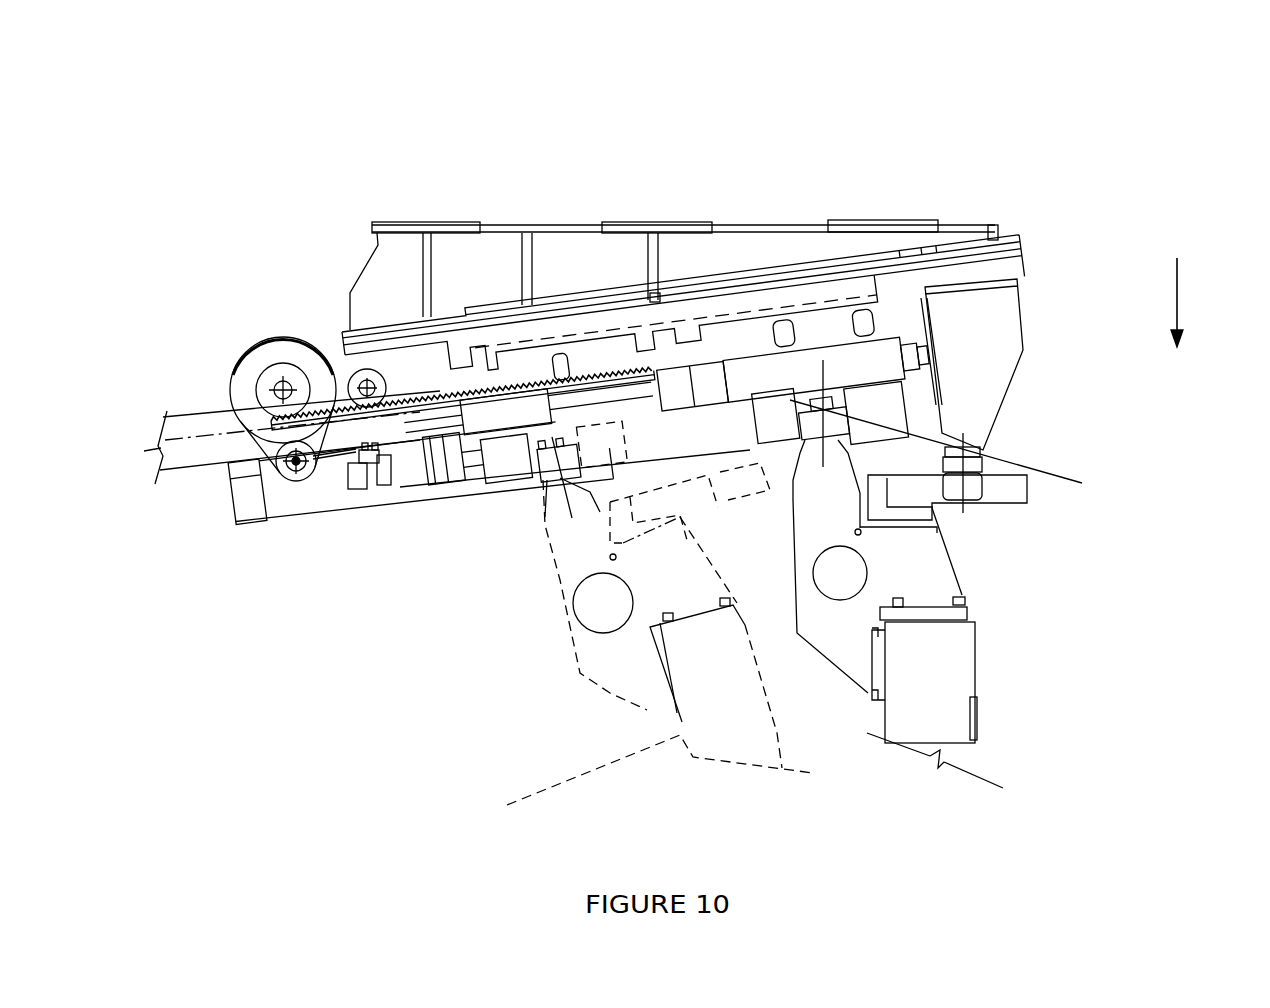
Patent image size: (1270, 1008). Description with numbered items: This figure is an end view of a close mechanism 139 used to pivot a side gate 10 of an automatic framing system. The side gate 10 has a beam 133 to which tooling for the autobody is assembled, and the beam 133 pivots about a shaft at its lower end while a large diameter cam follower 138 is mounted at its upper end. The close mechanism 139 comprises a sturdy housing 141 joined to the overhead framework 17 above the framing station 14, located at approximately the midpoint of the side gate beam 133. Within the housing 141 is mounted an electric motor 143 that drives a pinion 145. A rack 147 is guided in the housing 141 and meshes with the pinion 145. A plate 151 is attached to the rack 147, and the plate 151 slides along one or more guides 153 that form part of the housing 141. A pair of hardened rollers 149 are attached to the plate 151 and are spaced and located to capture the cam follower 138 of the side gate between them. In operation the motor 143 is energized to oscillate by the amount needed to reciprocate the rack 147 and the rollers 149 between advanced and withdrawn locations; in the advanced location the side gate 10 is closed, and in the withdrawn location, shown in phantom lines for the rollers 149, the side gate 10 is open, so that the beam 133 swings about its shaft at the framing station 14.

The side gate 10 is at (978, 728).
The framing station 14 is at (1173, 287).
The overhead framework 17 is at (398, 228).
The side gate beam 133 is at (943, 650).
The cam follower 138 is at (832, 425).
The close mechanism 139 is at (318, 510).
The housing 141 is at (388, 292).
The electric motor 143 is at (268, 354).
The pinion 145 is at (267, 373).
The rack 147 is at (363, 482).
The hardened rollers 149 is at (630, 345).
The plate 151 is at (848, 370).
The guides 153 is at (590, 397).